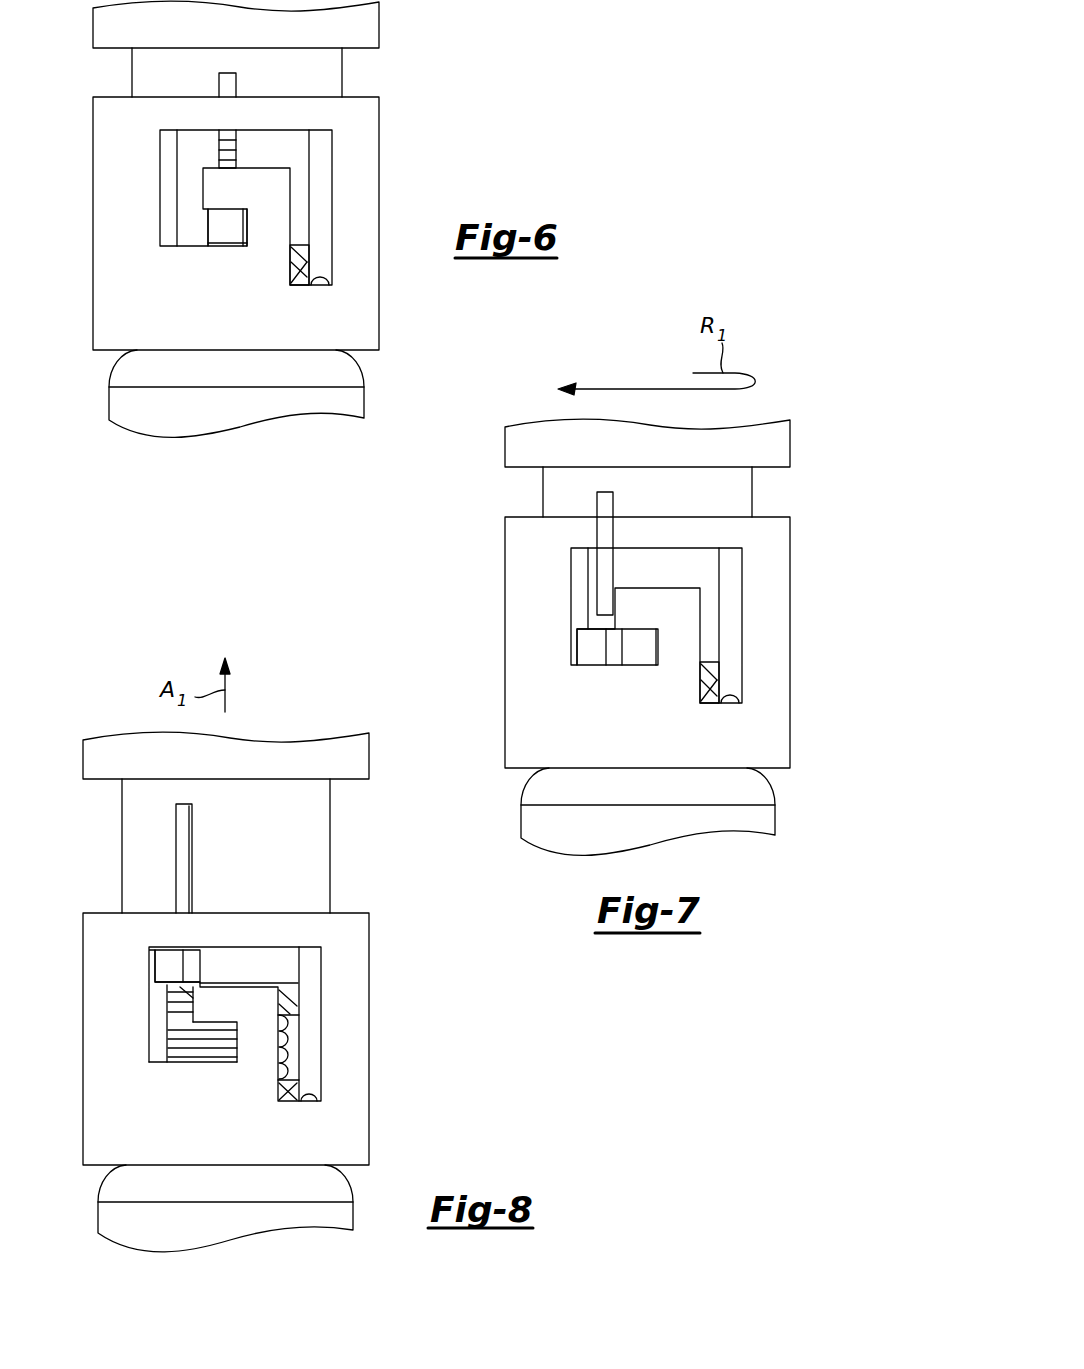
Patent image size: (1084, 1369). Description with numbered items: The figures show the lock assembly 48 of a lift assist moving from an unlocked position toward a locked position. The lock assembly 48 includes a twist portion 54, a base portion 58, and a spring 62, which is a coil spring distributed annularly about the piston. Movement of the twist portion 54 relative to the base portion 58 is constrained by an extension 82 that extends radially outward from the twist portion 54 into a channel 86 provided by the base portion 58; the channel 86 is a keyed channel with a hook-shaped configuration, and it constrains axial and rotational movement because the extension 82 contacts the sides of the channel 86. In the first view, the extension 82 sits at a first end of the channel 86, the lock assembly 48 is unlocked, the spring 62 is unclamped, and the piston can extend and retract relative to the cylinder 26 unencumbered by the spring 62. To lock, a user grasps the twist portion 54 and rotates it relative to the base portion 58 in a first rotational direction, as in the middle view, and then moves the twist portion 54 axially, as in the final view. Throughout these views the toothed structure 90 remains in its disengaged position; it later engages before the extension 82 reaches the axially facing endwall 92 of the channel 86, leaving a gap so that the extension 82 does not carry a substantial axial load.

In FIG. 6, the cylinder 26 is at (133, 401).
In FIG. 7, the cylinder 26 is at (750, 820).
In FIG. 8, the cylinder 26 is at (118, 1216).
In FIG. 6, the lock assembly 48 is at (472, 150).
In FIG. 7, the lock assembly 48 is at (472, 550).
In FIG. 8, the lock assembly 48 is at (455, 1020).
In FIG. 6, the twist portion 54 is at (192, 162).
In FIG. 7, the twist portion 54 is at (600, 623).
In FIG. 8, the twist portion 54 is at (241, 950).
In FIG. 6, the base portion 58 is at (121, 296).
In FIG. 7, the base portion 58 is at (534, 715).
In FIG. 8, the base portion 58 is at (112, 1111).
In FIG. 8, the spring 62 is at (175, 1030).
In FIG. 6, the extension 82 is at (221, 227).
In FIG. 7, the extension 82 is at (593, 645).
In FIG. 8, the extension 82 is at (165, 972).
In FIG. 6, the channel 86 is at (288, 149).
In FIG. 7, the channel 86 is at (700, 567).
In FIG. 8, the channel 86 is at (279, 965).
In FIG. 6, the toothed structure 90 is at (303, 253).
In FIG. 7, the toothed structure 90 is at (707, 692).
In FIG. 8, the toothed structure 90 is at (290, 1003).
In FIG. 6, the endwall 92 is at (325, 284).
In FIG. 7, the endwall 92 is at (735, 703).
In FIG. 8, the endwall 92 is at (318, 1101).